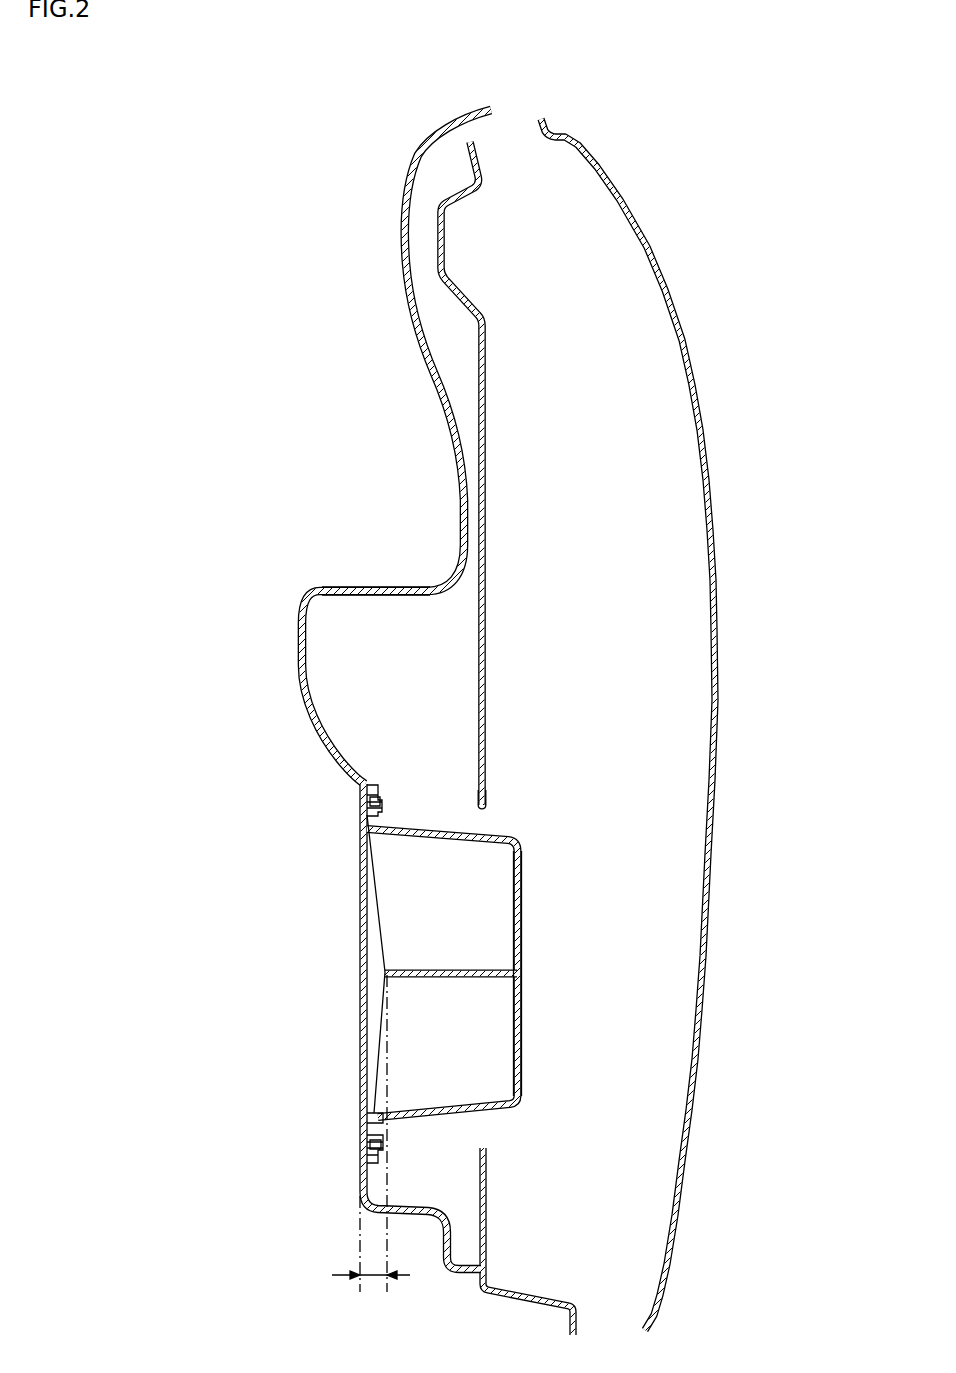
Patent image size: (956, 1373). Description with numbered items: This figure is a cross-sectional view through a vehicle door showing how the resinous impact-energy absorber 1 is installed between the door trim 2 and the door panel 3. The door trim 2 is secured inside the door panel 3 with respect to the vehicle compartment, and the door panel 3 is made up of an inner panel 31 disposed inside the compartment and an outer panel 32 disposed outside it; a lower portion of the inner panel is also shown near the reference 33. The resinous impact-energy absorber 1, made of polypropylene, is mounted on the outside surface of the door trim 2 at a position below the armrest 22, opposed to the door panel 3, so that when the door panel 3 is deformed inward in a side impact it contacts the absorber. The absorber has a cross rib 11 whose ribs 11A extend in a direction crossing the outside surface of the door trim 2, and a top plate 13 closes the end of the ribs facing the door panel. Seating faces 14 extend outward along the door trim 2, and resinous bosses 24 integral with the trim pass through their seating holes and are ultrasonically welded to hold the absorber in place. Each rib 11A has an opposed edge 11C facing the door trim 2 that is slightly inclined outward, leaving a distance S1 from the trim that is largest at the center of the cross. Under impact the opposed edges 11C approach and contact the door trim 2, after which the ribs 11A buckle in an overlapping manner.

The resinous impact-energy absorber 1 is at (420, 1021).
The door trim 2 is at (405, 153).
The door panel 3 is at (601, 709).
The cross rib 11 is at (416, 1026).
The rib 11A is at (400, 882).
The opposed edge 11C is at (373, 928).
The top plate 13 is at (518, 1013).
The seating face 14 is at (370, 792).
The armrest 22 is at (377, 583).
The resinous boss 24 is at (383, 803).
The inner panel 31 is at (487, 343).
The outer panel 32 is at (662, 265).
The lower end of inner panel 33 is at (484, 818).
The distance S1 is at (371, 1149).